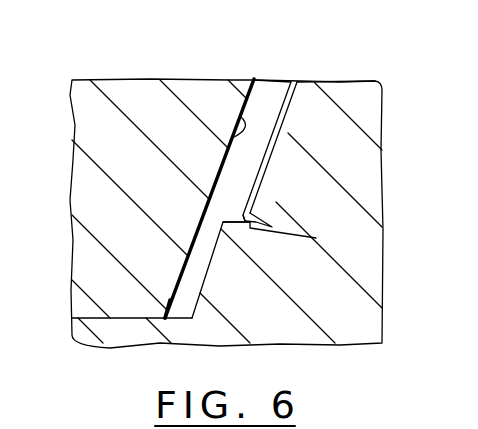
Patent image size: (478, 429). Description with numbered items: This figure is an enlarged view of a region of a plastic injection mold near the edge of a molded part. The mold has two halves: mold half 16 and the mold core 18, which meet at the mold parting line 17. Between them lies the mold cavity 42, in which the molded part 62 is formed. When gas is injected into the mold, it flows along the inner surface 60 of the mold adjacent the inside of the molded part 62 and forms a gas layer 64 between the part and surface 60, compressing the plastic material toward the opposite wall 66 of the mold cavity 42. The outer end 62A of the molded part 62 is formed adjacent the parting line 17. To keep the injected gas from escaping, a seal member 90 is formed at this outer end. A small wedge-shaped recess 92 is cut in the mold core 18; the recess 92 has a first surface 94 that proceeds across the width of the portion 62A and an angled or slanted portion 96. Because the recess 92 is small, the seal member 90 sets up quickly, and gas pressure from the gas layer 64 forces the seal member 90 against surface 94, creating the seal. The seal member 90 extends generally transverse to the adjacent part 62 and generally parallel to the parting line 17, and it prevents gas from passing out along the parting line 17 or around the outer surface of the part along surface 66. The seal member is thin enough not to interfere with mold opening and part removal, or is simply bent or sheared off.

The mold half 16 is at (80, 167).
The mold parting line 17 is at (90, 314).
The mold core 18 is at (373, 250).
The mold cavity 42 is at (262, 80).
The inner surface of the mold 60 is at (292, 98).
The molded part 62 is at (268, 90).
The outer end of the molded part 62A is at (187, 255).
The gas layer 64 is at (293, 88).
The opposite wall of the mold cavity 66 is at (238, 124).
The seal member 90 is at (243, 222).
The wedge-shaped recess 92 is at (310, 237).
The first surface of the recess 94 is at (237, 232).
The slanted portion of the recess 96 is at (265, 217).